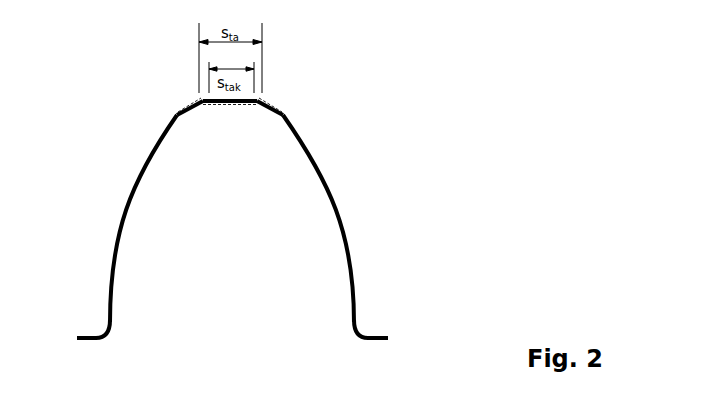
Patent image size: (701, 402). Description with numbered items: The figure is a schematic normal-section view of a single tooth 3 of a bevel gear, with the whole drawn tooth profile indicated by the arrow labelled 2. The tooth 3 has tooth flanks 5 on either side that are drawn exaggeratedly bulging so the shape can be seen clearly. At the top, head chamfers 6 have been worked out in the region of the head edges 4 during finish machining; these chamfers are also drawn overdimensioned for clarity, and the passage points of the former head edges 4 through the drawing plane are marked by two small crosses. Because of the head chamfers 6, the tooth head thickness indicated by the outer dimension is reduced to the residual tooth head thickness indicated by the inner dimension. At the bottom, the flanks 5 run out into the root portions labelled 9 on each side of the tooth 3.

The tooth 2 is at (330, 85).
The tooth 3 is at (293, 187).
The head edges 4 is at (200, 100).
The tooth flanks 5 is at (132, 205).
The head chamfers 6 is at (272, 110).
The tooth root 9 is at (82, 340).